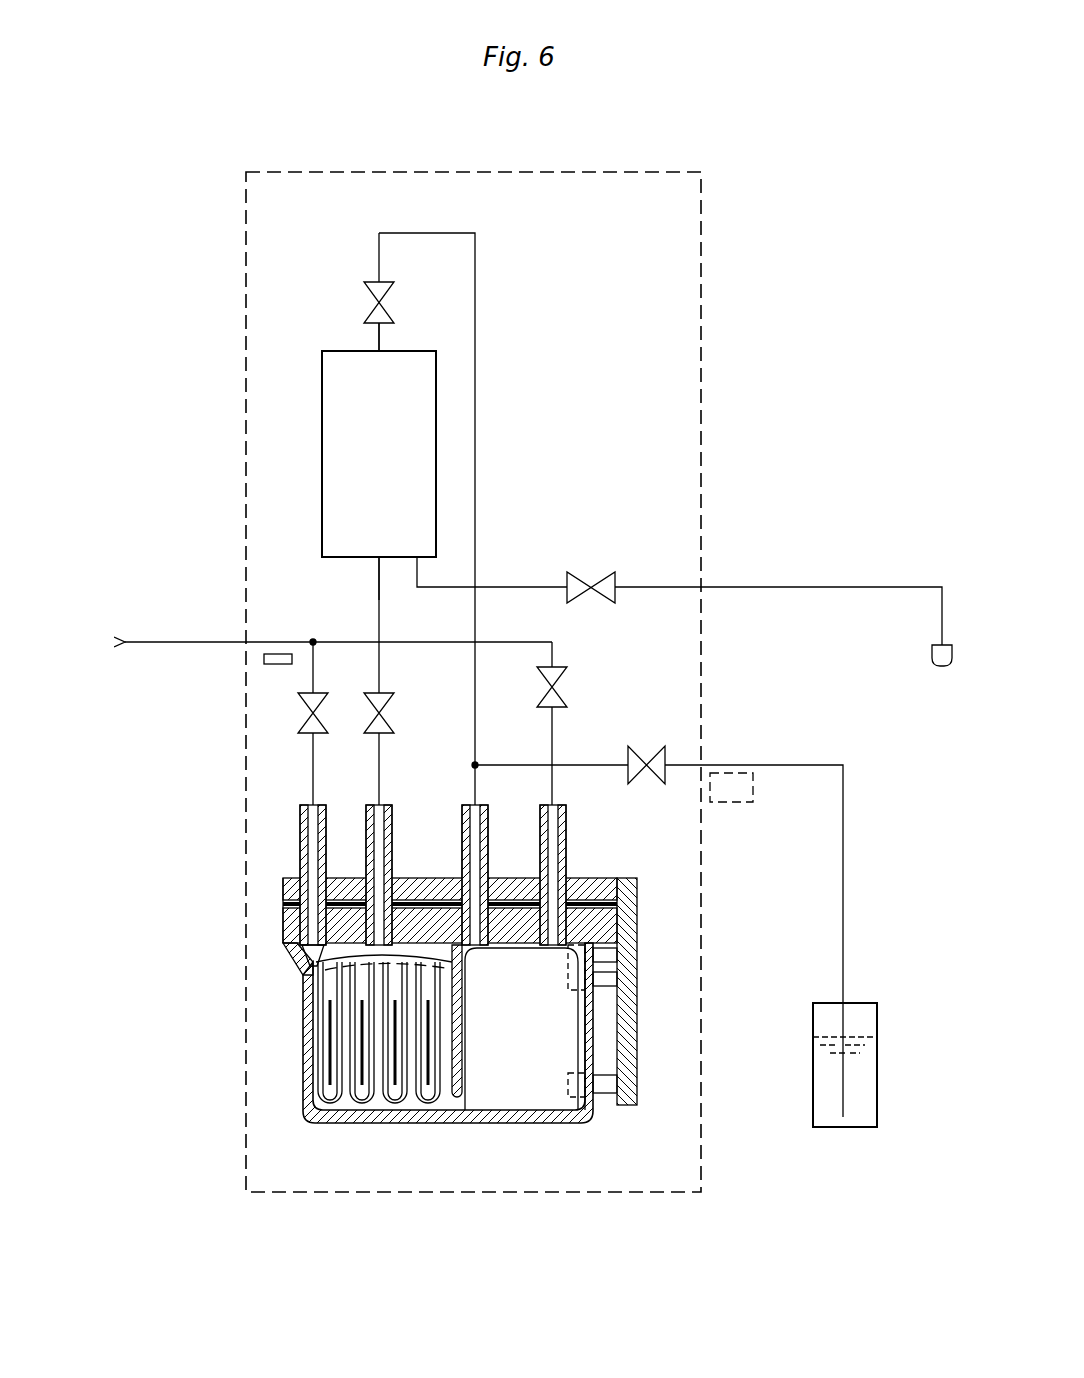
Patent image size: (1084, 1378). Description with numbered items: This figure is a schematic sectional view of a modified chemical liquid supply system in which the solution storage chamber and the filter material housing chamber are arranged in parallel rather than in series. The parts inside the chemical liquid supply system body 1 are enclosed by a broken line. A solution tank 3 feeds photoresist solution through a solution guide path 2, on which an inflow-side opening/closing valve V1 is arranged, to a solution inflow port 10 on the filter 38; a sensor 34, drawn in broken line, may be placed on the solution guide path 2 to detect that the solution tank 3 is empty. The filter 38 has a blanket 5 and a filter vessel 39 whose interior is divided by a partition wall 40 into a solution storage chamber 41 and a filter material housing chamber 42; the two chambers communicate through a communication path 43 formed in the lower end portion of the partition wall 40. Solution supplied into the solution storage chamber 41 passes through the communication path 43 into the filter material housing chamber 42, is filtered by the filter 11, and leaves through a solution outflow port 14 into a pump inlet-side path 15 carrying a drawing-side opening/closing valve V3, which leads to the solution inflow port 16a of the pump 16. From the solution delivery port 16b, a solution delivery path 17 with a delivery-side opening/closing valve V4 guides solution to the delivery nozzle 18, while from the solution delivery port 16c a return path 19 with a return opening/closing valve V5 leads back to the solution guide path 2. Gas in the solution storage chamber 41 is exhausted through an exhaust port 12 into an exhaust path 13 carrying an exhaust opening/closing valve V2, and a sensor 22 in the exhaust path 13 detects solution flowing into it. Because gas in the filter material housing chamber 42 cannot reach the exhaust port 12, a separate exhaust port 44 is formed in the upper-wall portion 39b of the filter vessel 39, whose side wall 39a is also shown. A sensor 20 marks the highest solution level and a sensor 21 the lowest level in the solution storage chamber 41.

The chemical liquid supply system body 1 is at (703, 244).
The solution guide path 2 is at (843, 885).
The solution tank 3 is at (868, 1057).
The blanket 5 is at (540, 961).
The solution inflow port 10 is at (436, 900).
The filter 11 is at (332, 1060).
The exhaust port 12 is at (562, 892).
The exhaust path 13 is at (182, 642).
The solution outflow port 14 is at (354, 892).
The pump inlet-side path 15 is at (382, 614).
The pump 16 is at (322, 450).
The solution inflow port 16a is at (378, 562).
The solution delivery port 16b is at (420, 566).
The solution delivery port 16c is at (379, 347).
The solution delivery path 17 is at (833, 587).
The delivery nozzle 18 is at (935, 666).
The return path 19 is at (476, 283).
The sensor 20 is at (610, 966).
The sensor 21 is at (605, 1086).
The sensor 22 is at (264, 660).
The sensor 34 is at (753, 789).
The filter 38 is at (642, 880).
The filter vessel 39 is at (386, 1124).
The container side wall 39a is at (588, 1026).
The upper-wall portion 39b is at (312, 950).
The partition wall 40 is at (464, 1060).
The solution storage chamber 41 is at (515, 1100).
The filter material housing chamber 42 is at (300, 970).
The communication path 43 is at (457, 1100).
The exhaust port 44 is at (300, 912).
The inflow-side opening/closing valve V1 is at (652, 758).
The exhaust opening/closing valve V2 is at (312, 700).
The drawing-side opening/closing valve V3 is at (381, 708).
The delivery-side opening/closing valve V4 is at (600, 580).
The return opening/closing valve V5 is at (379, 282).